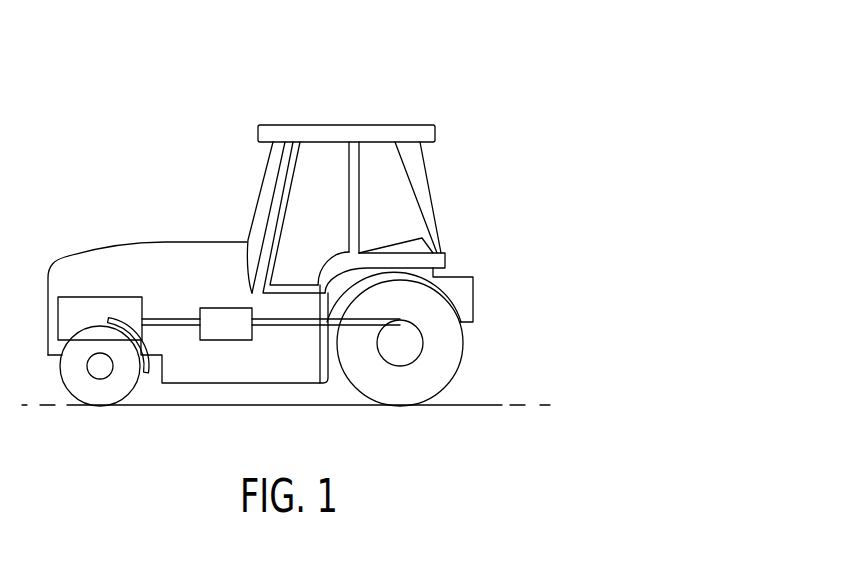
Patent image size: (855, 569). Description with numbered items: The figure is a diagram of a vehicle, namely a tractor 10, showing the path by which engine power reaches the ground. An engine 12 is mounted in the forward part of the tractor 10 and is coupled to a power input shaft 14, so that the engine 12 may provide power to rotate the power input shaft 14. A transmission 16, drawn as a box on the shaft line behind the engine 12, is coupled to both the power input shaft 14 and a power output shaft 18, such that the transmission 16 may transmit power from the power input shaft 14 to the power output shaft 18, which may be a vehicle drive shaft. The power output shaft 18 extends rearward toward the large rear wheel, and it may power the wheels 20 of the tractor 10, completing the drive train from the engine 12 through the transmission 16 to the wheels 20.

The tractor 10 is at (286, 240).
The engine 12 is at (127, 297).
The power input shaft 14 is at (175, 320).
The transmission 16 is at (224, 340).
The power output shaft 18 is at (312, 326).
The wheels 20 is at (433, 333).